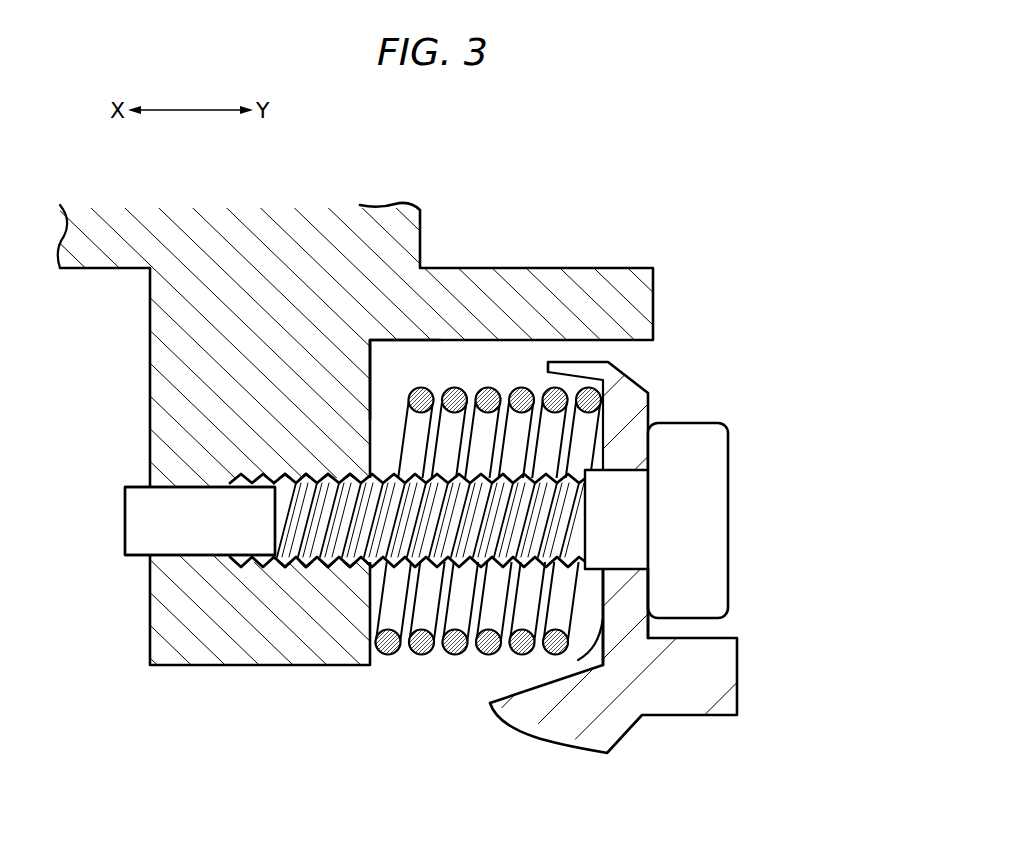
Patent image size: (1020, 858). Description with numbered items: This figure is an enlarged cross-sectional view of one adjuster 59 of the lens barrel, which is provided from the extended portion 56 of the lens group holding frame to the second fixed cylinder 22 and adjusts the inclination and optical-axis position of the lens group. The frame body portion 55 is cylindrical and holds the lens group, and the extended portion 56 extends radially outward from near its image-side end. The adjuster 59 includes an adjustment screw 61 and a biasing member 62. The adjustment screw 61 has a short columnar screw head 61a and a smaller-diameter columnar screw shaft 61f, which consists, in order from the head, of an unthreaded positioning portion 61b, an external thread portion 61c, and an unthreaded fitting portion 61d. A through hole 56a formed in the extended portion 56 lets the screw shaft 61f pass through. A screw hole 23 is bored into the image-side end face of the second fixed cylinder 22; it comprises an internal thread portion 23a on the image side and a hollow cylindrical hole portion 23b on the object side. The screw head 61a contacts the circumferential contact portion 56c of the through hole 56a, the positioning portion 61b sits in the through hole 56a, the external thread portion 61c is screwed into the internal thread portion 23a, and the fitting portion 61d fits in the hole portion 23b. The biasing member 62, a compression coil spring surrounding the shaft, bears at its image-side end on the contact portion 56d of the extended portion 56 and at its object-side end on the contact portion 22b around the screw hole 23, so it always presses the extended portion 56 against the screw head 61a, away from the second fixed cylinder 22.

The second fixed cylinder 22 is at (150, 322).
The contact portion 22b is at (372, 356).
The screw hole 23 is at (241, 480).
The internal thread portion 23a is at (366, 456).
The hole portion 23b is at (232, 456).
The frame body portion 55 is at (694, 716).
The extended portion 56 is at (632, 376).
The through hole 56a is at (623, 471).
The contact portion 56c is at (650, 592).
The contact portion 56d is at (620, 572).
The adjuster 59 is at (708, 226).
The adjustment screw 61 is at (730, 512).
The screw head 61a is at (646, 519).
The positioning portion 61b is at (600, 627).
The external thread portion 61c is at (402, 528).
The fitting portion 61d is at (205, 528).
The screw shaft 61f is at (330, 773).
The biasing member 62 is at (455, 390).